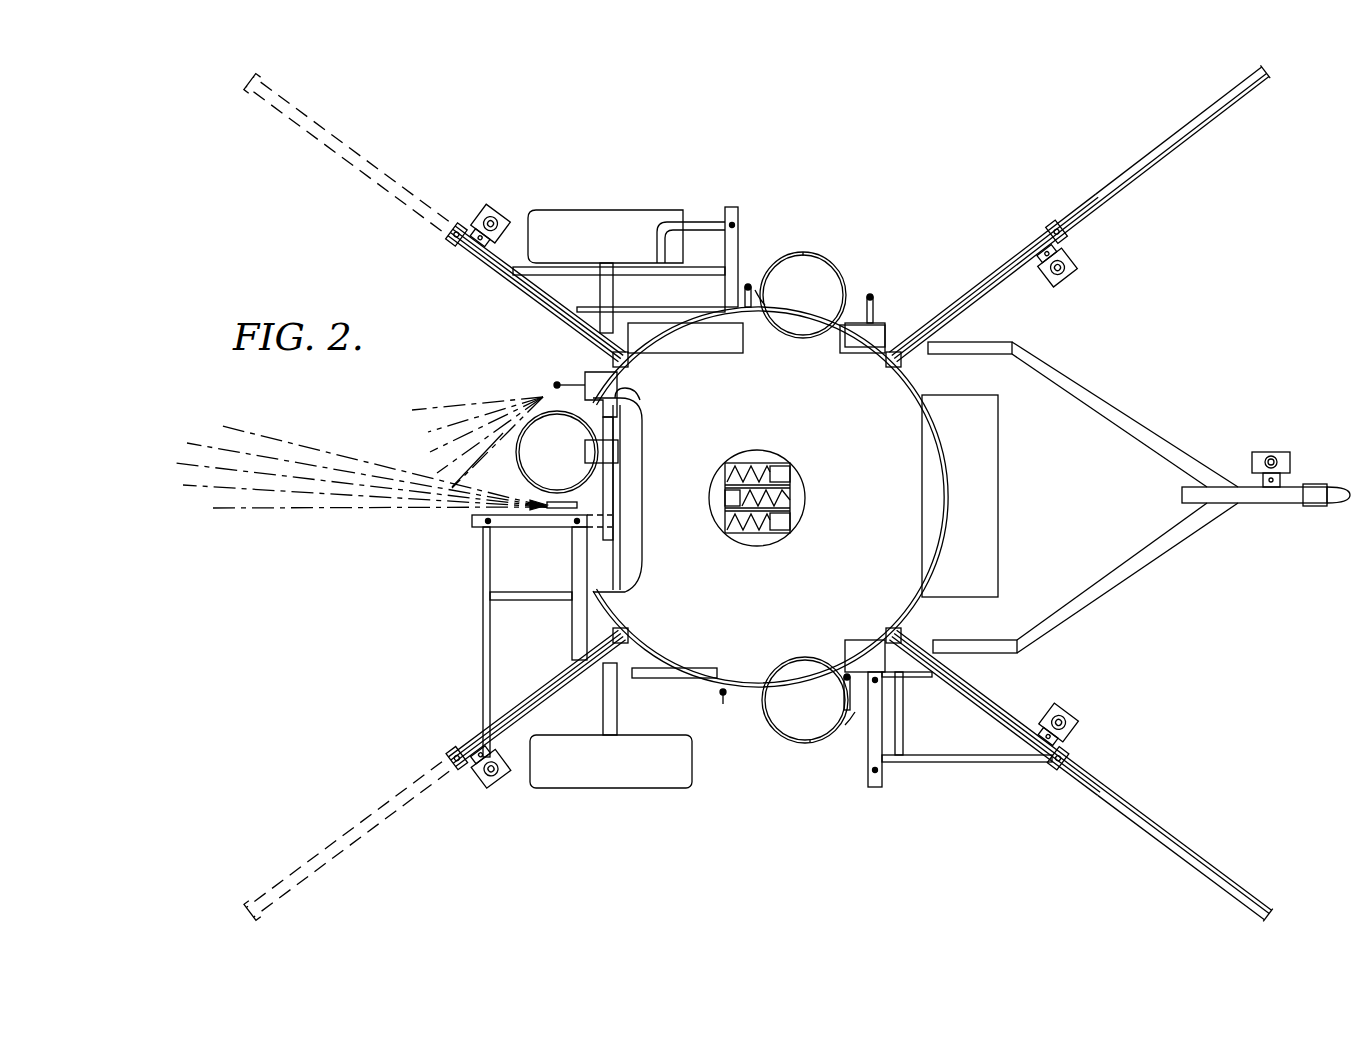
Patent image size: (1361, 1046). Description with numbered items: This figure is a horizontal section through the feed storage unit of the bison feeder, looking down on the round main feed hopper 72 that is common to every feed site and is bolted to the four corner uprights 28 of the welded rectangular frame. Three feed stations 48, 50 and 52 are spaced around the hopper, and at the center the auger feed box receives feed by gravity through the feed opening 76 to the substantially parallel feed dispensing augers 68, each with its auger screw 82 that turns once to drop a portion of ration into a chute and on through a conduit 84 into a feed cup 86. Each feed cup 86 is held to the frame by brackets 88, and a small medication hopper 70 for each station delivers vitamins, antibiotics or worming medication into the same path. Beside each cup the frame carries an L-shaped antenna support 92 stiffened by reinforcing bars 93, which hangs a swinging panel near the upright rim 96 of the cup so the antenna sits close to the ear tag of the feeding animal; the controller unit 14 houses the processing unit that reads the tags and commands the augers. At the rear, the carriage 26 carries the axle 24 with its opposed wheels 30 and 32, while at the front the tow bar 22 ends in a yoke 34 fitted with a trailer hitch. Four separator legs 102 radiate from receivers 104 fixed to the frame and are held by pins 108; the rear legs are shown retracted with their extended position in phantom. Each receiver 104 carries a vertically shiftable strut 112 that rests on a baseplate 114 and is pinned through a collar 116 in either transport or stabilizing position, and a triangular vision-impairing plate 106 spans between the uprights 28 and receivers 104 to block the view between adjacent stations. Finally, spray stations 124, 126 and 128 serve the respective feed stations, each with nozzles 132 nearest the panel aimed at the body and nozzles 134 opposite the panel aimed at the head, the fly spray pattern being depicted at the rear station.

The controller unit 14 is at (1008, 500).
The tow bar 22 is at (1258, 504).
The axle 24 is at (605, 698).
The carriage 26 is at (645, 515).
The uprights 28 is at (630, 362).
The wheel 30 is at (600, 208).
The wheel 32 is at (672, 782).
The yoke 34 is at (1070, 398).
The feed station 48 is at (803, 252).
The feed station 50 is at (505, 433).
The feed station 52 is at (810, 742).
The feed dispensing auger 68 is at (782, 470).
The medication hopper 70 is at (634, 558).
The main feed hopper 72 is at (960, 487).
The feed opening 76 is at (737, 468).
The auger screw 82 is at (757, 468).
The conduit 84 is at (614, 453).
The feed cup 86 is at (815, 265).
The brackets 88 is at (625, 407).
The antenna support 92 is at (736, 205).
The reinforcing bars 93 is at (726, 220).
The upright rim 96 is at (754, 286).
The legs 102 is at (1190, 135).
The receivers 104 is at (1020, 248).
The vision-impairing plate 106 is at (975, 290).
The pins 108 is at (1053, 222).
The strut 112 is at (500, 215).
The baseplate 114 is at (488, 215).
The collar 116 is at (478, 232).
The spray station 124 is at (866, 300).
The spray station 126 is at (527, 378).
The spray station 128 is at (729, 720).
The spray nozzle 132 is at (748, 305).
The spray nozzle 134 is at (877, 300).